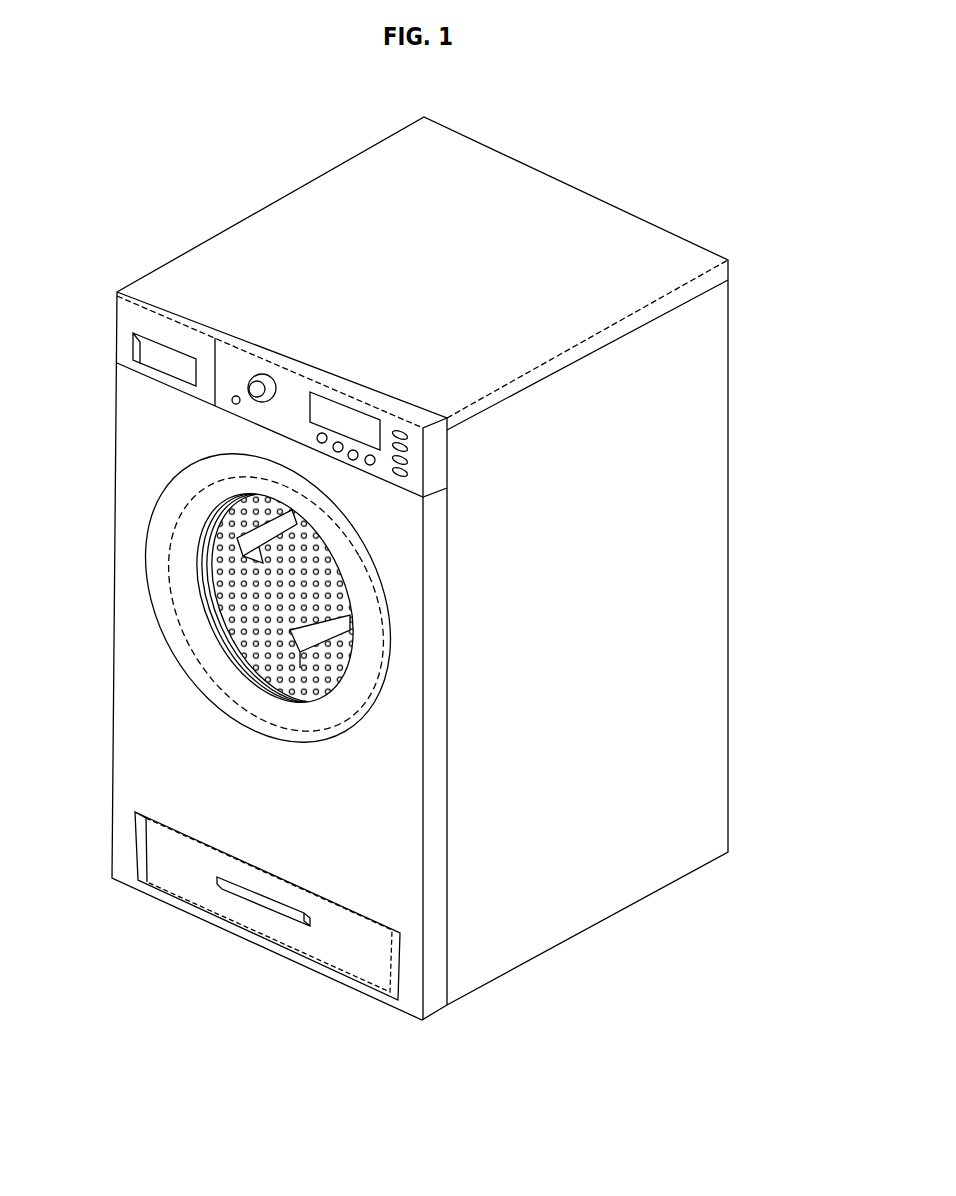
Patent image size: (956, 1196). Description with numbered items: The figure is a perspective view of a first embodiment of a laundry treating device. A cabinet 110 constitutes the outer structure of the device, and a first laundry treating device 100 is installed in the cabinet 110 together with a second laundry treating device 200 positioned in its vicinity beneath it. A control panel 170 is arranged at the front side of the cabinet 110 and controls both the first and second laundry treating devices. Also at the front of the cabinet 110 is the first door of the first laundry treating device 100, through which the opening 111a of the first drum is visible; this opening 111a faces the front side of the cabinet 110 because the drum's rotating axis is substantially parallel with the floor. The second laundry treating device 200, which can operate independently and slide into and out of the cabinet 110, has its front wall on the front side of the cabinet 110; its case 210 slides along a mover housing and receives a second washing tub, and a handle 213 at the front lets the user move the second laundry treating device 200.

The first laundry treating device 100 is at (163, 557).
The cabinet 110 is at (710, 548).
The opening 111a is at (255, 603).
The control panel 170 is at (238, 362).
The second laundry treating device 200 is at (252, 916).
The case 210 is at (187, 881).
The handle 213 is at (245, 898).